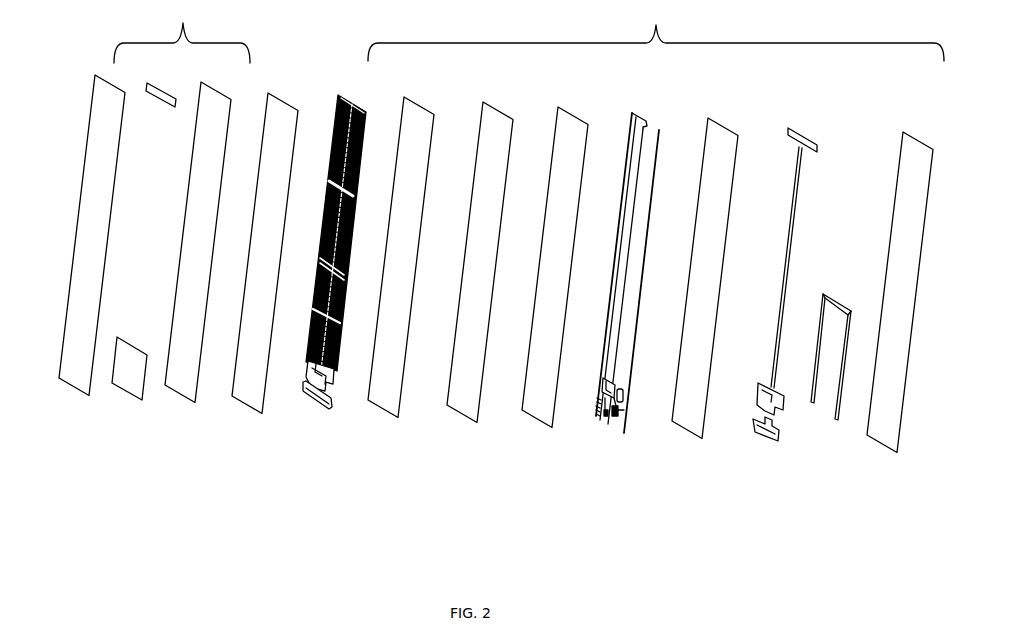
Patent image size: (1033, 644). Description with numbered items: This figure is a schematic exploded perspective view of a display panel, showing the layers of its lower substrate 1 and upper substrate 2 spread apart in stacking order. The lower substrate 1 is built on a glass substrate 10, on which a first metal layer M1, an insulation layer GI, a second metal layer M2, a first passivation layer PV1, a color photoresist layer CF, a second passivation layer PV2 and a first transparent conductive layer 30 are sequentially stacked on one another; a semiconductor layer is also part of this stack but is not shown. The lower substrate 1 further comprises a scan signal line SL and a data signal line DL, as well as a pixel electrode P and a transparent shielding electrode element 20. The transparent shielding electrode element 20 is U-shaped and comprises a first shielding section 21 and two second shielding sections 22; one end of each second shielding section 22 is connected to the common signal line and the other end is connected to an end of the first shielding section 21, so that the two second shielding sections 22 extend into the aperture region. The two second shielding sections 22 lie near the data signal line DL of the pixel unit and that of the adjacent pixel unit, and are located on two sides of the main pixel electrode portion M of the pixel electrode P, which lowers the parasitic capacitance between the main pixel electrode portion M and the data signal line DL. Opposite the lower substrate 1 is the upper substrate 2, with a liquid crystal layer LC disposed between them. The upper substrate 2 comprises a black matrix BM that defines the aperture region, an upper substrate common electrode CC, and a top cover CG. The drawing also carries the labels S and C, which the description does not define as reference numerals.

The lower substrate 1 is at (658, 520).
The upper substrate 2 is at (117, 465).
The top cover CG is at (62, 397).
The black matrix BM is at (127, 406).
The upper substrate common electrode CC is at (185, 417).
The liquid crystal layer LC is at (249, 424).
The pixel electrode P is at (349, 222).
The slit S is at (353, 193).
The main pixel electrode portion M is at (339, 321).
The first transparent conductive layer 30 is at (322, 412).
The second passivation layer PV2 is at (387, 417).
The color photoresist layer CF is at (463, 418).
The first passivation layer PV1 is at (540, 427).
The data signal line DL is at (620, 293).
The second metal layer M2 is at (606, 432).
The insulation layer GI is at (687, 437).
The scan signal line SL is at (782, 440).
The first metal layer M1 is at (763, 418).
The contact C is at (778, 398).
The transparent shielding electrode element 20 is at (834, 361).
The first shielding section 21 is at (837, 305).
The second shielding sections 22 is at (817, 350).
The glass substrate 10 is at (890, 452).